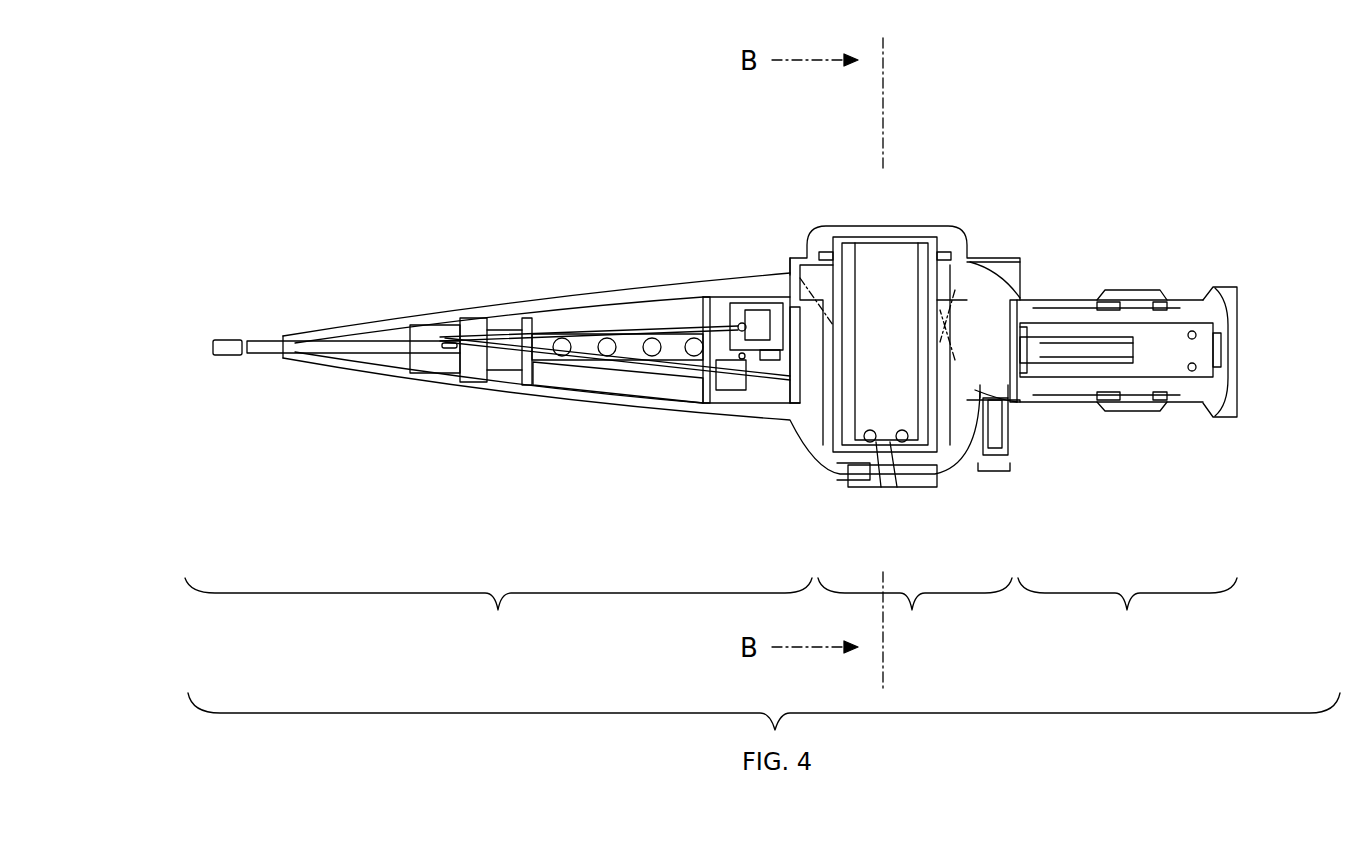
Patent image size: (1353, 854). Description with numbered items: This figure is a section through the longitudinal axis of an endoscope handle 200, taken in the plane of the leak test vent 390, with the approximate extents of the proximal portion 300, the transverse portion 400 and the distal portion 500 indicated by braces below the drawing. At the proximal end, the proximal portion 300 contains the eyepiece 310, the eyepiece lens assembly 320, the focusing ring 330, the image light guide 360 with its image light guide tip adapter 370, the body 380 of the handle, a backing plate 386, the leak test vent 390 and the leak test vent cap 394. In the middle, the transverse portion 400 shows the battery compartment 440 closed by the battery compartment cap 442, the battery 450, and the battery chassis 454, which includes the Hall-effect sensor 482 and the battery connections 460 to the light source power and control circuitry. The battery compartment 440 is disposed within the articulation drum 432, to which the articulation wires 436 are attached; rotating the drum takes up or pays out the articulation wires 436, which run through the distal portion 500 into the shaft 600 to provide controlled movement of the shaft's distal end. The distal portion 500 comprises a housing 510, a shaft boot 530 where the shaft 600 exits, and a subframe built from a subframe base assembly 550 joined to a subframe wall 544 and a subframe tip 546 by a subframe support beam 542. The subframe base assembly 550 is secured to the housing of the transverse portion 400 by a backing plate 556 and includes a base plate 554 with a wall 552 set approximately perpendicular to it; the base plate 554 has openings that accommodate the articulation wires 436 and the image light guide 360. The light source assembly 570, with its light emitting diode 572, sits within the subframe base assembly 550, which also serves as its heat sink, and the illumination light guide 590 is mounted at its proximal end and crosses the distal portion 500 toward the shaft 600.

The endoscope handle 200 is at (400, 152).
The distal portion 500 is at (498, 611).
The transverse portion 400 is at (915, 611).
The proximal portion 300 is at (1127, 611).
The housing 510 is at (660, 406).
The shaft boot 530 is at (335, 337).
The shaft 600 is at (248, 356).
The subframe tip 546 is at (430, 328).
The subframe wall 544 is at (527, 318).
The articulation wires 436 is at (567, 381).
The subframe support beam 542 is at (613, 380).
The illumination light guide 590 is at (738, 325).
The wall 552 is at (740, 404).
The backing plate 556 is at (786, 297).
The base plate 554 is at (795, 404).
The subframe base assembly 550 is at (736, 318).
The light source assembly 570 is at (731, 303).
The light emitting diode 572 is at (750, 303).
The battery compartment cap 442 is at (826, 226).
The battery compartment 440 is at (972, 254).
The battery chassis 454 is at (925, 258).
The battery 450 is at (897, 250).
The body 380 is at (975, 280).
The backing plate 386 is at (1020, 298).
The articulation drum 432 is at (842, 477).
The battery connections 460 is at (906, 445).
The Hall-effect sensor 482 is at (890, 470).
The leak test vent 390 is at (1007, 420).
The leak test vent cap 394 is at (995, 472).
The eyepiece lens assembly 320 is at (1160, 362).
The focusing ring 330 is at (1153, 292).
The image light guide tip adapter 370 is at (1160, 323).
The image light guide 360 is at (1033, 350).
The eyepiece 310 is at (1240, 328).